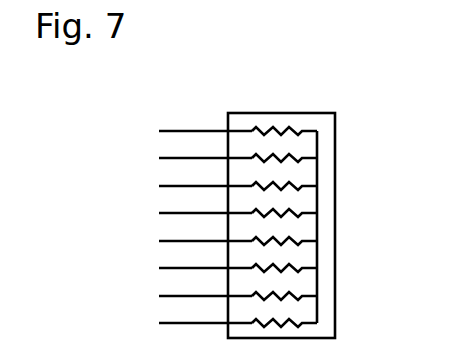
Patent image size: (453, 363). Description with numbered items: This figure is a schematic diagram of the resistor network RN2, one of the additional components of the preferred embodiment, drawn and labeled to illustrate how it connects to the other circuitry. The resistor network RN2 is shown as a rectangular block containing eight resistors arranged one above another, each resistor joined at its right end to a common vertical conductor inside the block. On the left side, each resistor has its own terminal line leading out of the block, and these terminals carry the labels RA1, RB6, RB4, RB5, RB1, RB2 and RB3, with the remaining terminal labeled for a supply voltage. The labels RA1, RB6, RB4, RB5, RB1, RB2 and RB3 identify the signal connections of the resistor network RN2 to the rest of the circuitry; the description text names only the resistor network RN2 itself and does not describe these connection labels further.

The resistor network RN2 is at (282, 213).
The port pin RA1 connection RA1 is at (205, 119).
The port pin RB6 connection RB6 is at (205, 146).
The port pin RB4 connection RB4 is at (205, 174).
The port pin RB5 connection RB5 is at (205, 201).
The port pin RB1 connection RB1 is at (205, 229).
The port pin RB2 connection RB2 is at (205, 256).
The port pin RB3 connection RB3 is at (205, 284).